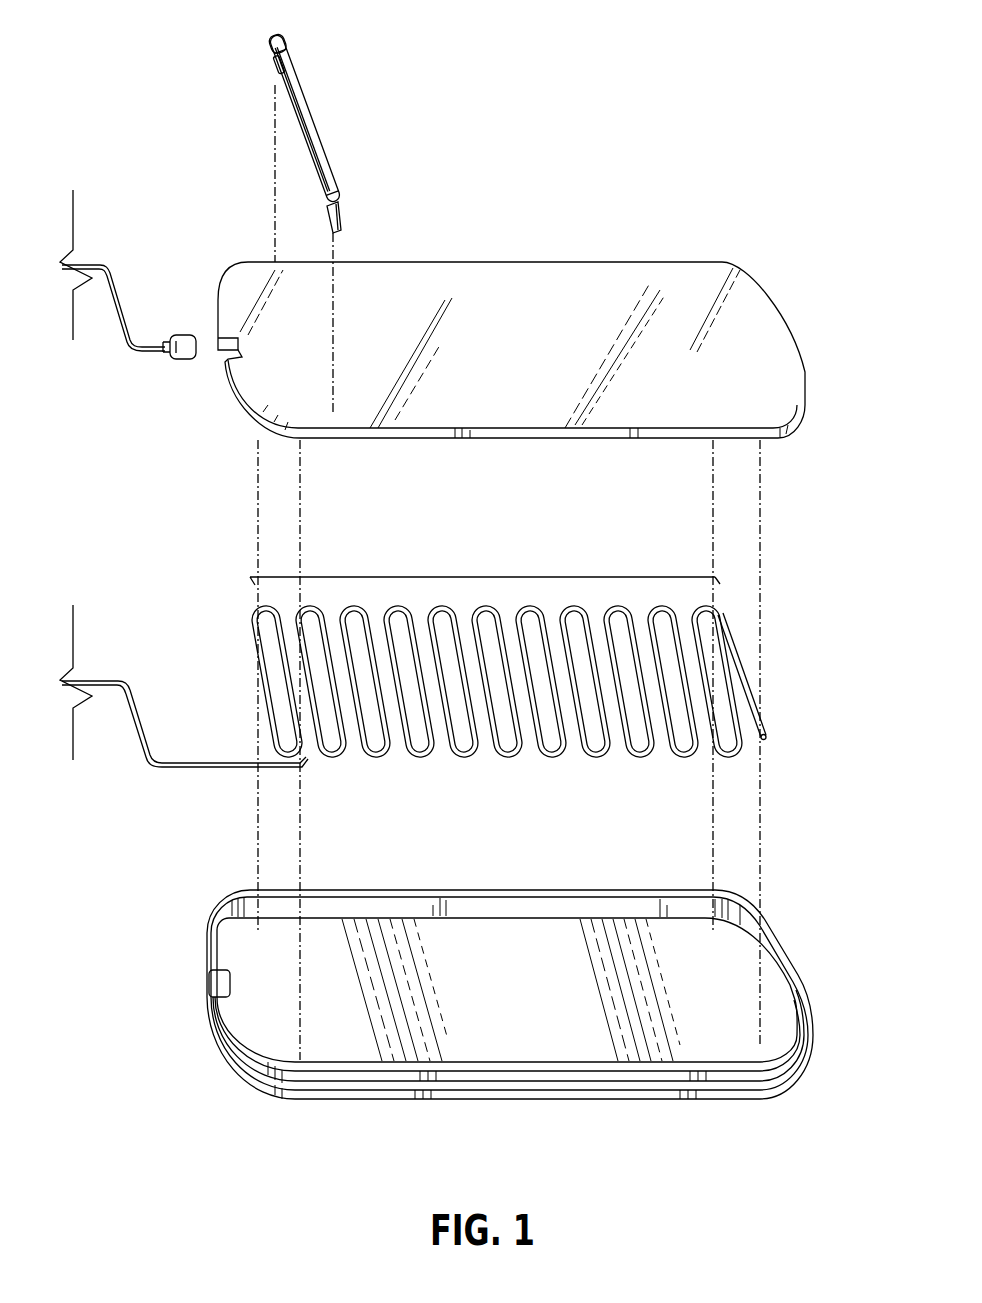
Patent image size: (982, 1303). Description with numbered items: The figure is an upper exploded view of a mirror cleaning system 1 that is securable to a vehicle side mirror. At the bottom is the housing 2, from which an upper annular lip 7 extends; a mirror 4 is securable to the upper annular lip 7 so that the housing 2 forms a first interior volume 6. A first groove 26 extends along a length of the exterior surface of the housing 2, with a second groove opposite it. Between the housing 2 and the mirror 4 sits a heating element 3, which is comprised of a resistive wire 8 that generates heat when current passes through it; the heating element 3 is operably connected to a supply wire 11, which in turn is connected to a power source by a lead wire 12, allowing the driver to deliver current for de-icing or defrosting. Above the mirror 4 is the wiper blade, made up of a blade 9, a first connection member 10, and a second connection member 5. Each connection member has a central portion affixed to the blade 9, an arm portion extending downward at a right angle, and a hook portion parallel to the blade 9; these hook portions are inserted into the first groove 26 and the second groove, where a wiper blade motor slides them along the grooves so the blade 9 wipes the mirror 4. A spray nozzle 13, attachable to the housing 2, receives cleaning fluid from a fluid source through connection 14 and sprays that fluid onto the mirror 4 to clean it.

The mirror cleaning system 1 is at (696, 212).
The housing 2 is at (810, 990).
The heating element 3 is at (765, 738).
The mirror 4 is at (805, 357).
The second connection member 5 is at (272, 55).
The first interior volume 6 is at (513, 1014).
The upper annular lip 7 is at (512, 905).
The resistive wire 8 is at (503, 577).
The blade 9 is at (327, 140).
The first connection member 10 is at (340, 212).
The supply wire 11 is at (147, 722).
The lead wire 12 is at (100, 680).
The spray nozzle 13 is at (180, 336).
The connection 14 is at (95, 266).
The first groove 26 is at (738, 1085).